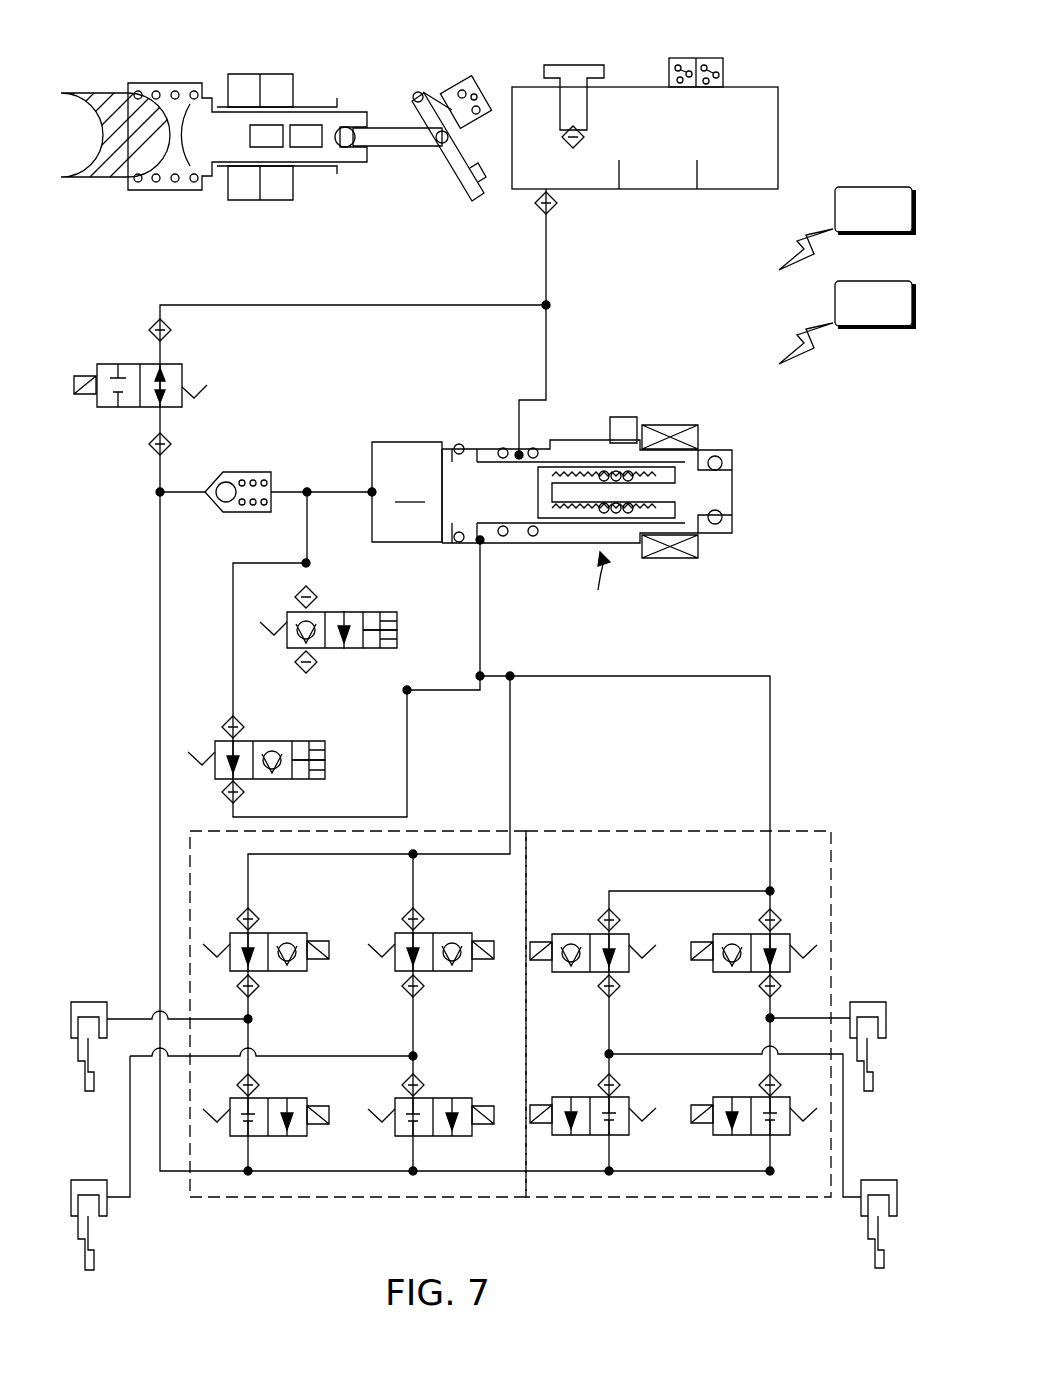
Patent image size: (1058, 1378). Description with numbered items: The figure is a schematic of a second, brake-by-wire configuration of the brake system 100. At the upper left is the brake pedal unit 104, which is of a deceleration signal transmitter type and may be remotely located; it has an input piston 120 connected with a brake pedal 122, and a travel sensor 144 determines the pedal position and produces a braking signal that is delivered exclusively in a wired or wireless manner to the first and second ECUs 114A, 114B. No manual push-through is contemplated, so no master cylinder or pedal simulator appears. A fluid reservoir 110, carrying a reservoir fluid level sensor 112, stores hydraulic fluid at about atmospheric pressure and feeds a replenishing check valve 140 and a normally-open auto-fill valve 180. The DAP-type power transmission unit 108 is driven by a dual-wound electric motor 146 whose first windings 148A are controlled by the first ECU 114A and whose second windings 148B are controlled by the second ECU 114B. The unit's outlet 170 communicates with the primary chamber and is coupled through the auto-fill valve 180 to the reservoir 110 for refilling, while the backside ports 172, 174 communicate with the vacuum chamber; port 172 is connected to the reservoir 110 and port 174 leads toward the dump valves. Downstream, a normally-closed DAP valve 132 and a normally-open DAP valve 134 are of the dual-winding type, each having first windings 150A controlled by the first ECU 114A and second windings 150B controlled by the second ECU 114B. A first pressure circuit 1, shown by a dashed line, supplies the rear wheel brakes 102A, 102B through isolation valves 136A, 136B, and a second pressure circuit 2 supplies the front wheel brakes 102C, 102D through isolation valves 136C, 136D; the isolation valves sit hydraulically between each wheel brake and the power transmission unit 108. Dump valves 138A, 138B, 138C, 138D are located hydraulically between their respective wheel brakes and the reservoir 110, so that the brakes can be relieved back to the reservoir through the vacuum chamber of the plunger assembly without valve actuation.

The brake system 100 is at (822, 54).
The brake pedal unit 104 is at (246, 138).
The power transmission unit 108 is at (579, 483).
The fluid reservoir 110 is at (778, 140).
The reservoir fluid level sensor 112 is at (682, 58).
The first electronic control unit 114A is at (906, 225).
The second electronic control unit 114B is at (906, 319).
The input piston 120 is at (172, 185).
The brake pedal 122 is at (468, 168).
The normally-closed DAP valve 132 is at (344, 612).
The normally-open DAP valve 134 is at (270, 741).
The isolation valve 136A is at (287, 933).
The isolation valve 136B is at (452, 933).
The isolation valve 136C is at (731, 934).
The isolation valve 136D is at (571, 934).
The dump valve 138A is at (287, 1098).
The dump valve 138B is at (452, 1098).
The dump valve 138C is at (731, 1098).
The dump valve 138D is at (571, 1098).
The replenishing check valve 140 is at (245, 472).
The travel sensor 144 is at (462, 82).
The electric motor 146 is at (710, 541).
The first windings 148A is at (670, 425).
The second windings 148B is at (672, 560).
The first windings 150A is at (397, 621).
The second windings 150B is at (397, 640).
The outlet 170 is at (368, 490).
The backside port 172 is at (515, 452).
The backside port 174 is at (482, 543).
The auto-fill valve 180 is at (108, 364).
The rear wheel brake 102A is at (110, 1006).
The rear wheel brake 102B is at (112, 1205).
The front wheel brake 102C is at (890, 1006).
The front wheel brake 102D is at (858, 1205).
The first pressure circuit 1 is at (425, 830).
The second pressure circuit 2 is at (648, 830).